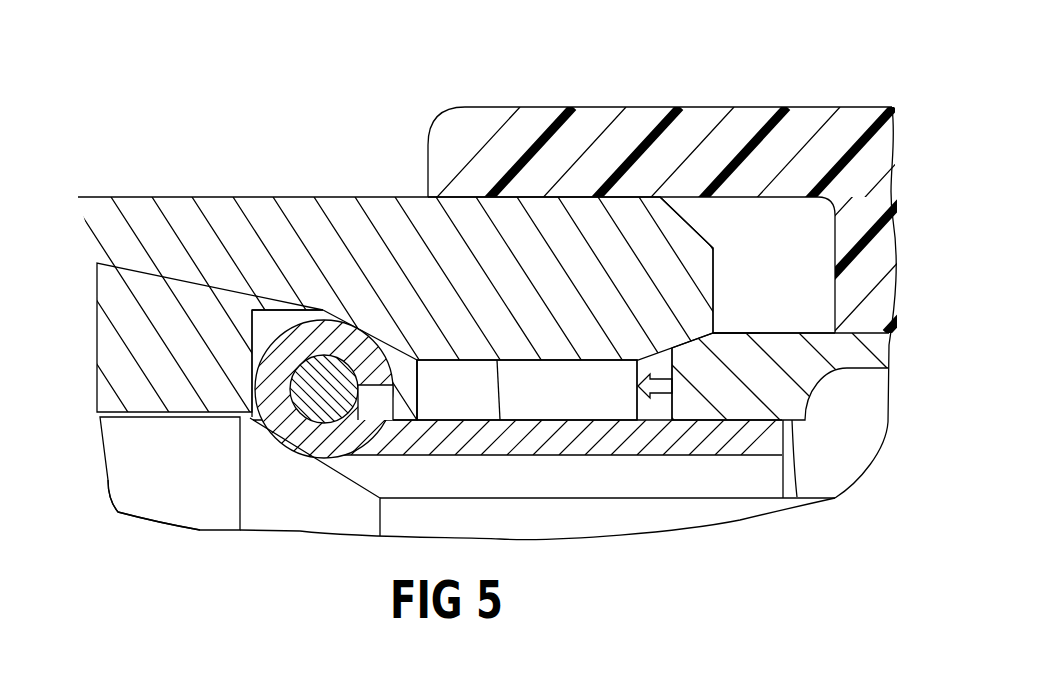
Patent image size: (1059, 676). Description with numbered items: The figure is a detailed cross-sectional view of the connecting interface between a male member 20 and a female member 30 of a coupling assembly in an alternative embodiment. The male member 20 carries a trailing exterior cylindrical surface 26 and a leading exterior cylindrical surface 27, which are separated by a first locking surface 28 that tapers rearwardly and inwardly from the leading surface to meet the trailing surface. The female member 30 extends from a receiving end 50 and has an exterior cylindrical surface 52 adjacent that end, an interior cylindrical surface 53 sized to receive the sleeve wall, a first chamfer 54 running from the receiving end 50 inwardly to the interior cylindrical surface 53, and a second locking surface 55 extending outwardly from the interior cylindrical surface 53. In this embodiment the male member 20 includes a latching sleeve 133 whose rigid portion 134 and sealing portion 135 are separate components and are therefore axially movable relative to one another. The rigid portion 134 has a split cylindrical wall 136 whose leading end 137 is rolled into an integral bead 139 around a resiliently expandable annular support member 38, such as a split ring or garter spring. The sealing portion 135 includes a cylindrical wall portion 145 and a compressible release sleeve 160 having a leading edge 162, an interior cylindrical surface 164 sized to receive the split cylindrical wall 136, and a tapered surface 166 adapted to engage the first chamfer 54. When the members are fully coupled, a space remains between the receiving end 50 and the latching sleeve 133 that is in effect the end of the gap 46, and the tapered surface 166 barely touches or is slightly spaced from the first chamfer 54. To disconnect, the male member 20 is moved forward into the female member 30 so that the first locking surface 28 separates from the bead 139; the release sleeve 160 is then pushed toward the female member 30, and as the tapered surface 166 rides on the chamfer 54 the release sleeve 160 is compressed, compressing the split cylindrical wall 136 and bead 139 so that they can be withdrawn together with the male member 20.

The male member 20 is at (118, 518).
The trailing exterior cylindrical surface 26 is at (584, 531).
The leading exterior cylindrical surface 27 is at (211, 491).
The first locking surface 28 is at (304, 506).
The female member 30 is at (513, 251).
The annular support member 38 is at (343, 397).
The gap 46 is at (765, 293).
The receiving end 50 is at (716, 287).
The exterior cylindrical surface 52 is at (340, 197).
The interior cylindrical surface 53 is at (500, 420).
The first chamfer 54 is at (644, 362).
The second locking surface 55 is at (400, 360).
The latching sleeve 133 is at (685, 250).
The rigid portion 134 is at (627, 450).
The sealing portion 135 is at (538, 113).
The split cylindrical wall 136 is at (677, 452).
The leading end 137 is at (273, 338).
The bead 139 is at (247, 387).
The cylindrical wall portion 145 is at (797, 118).
The release sleeve 160 is at (843, 370).
The leading edge 162 is at (672, 400).
The interior cylindrical surface 164 is at (797, 497).
The tapered surface 166 is at (716, 332).